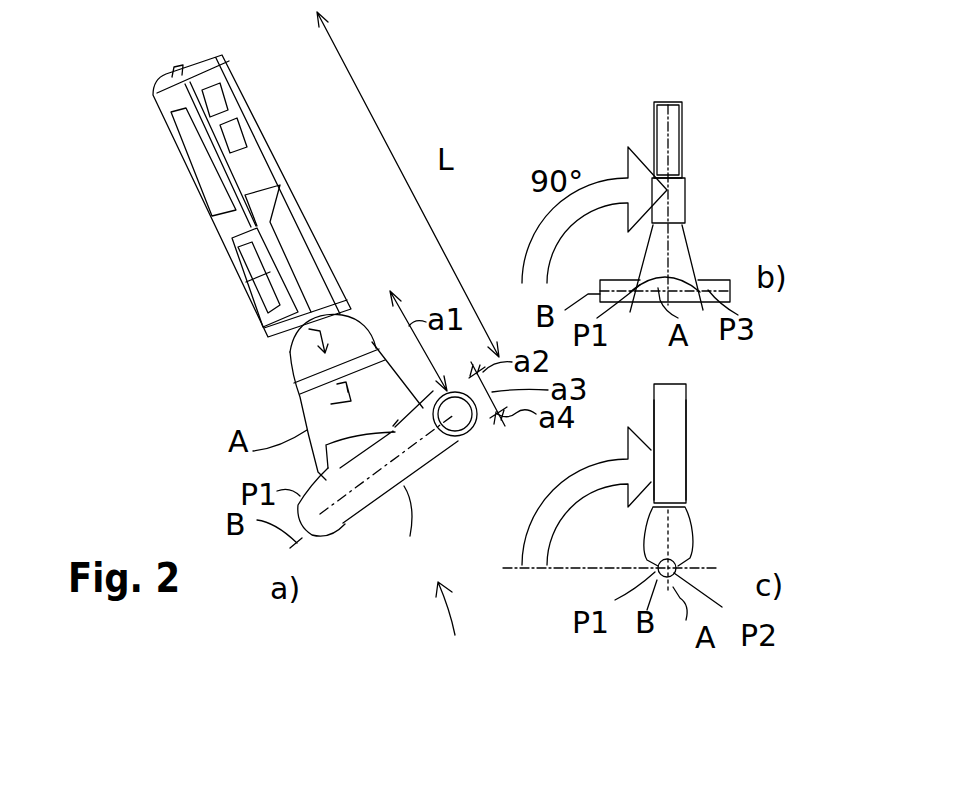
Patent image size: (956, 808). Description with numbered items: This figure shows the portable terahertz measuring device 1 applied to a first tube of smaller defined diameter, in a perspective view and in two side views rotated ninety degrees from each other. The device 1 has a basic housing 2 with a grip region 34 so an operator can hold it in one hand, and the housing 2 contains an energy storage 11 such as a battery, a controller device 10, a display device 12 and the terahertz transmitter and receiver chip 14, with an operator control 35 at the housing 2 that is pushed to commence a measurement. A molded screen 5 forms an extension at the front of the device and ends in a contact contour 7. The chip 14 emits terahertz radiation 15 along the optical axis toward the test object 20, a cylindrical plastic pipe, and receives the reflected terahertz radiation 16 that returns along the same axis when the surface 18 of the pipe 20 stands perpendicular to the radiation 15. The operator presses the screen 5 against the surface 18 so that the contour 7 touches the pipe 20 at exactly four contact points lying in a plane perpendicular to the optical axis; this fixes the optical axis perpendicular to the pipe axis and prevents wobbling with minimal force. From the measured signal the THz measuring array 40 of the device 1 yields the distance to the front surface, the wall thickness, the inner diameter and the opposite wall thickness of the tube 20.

The terahertz measuring device 1 is at (682, 103).
The basic housing 2 is at (683, 152).
The molded screen 5 is at (307, 402).
The contact contour 7 is at (327, 462).
The controller device 10 is at (228, 90).
The energy storage 11 is at (218, 198).
The display device 12 is at (267, 292).
The terahertz transmitter and receiver chip 14 is at (243, 137).
The terahertz radiation 15 is at (308, 333).
The reflected terahertz radiation 16 is at (300, 393).
The surface 18 is at (343, 524).
The test object 20 is at (458, 445).
The grip region 34 is at (174, 139).
The operator control 35 is at (256, 270).
The THz measuring array 40 is at (456, 629).